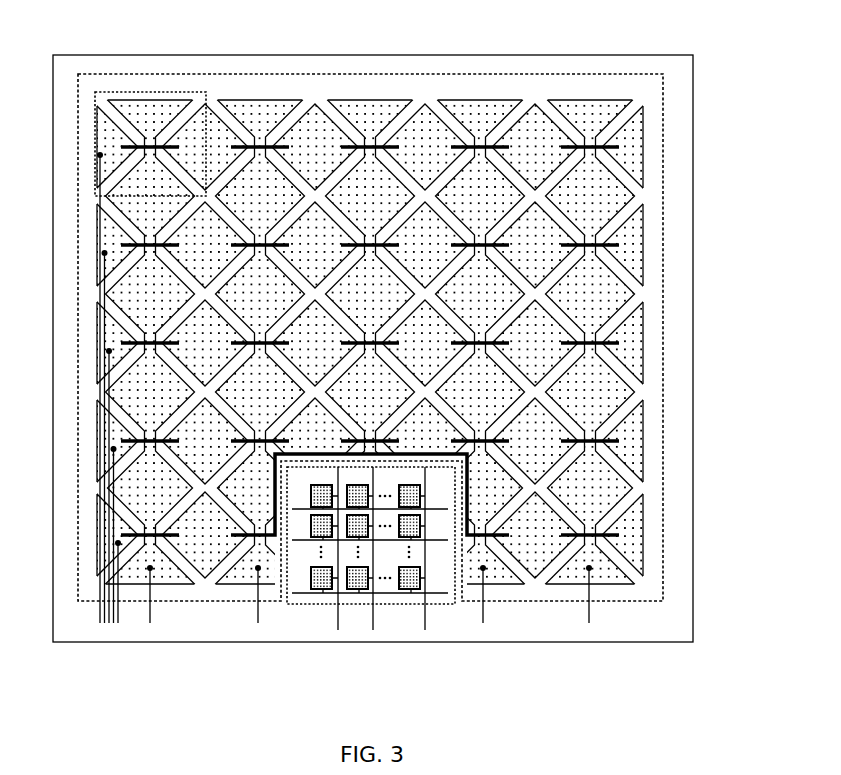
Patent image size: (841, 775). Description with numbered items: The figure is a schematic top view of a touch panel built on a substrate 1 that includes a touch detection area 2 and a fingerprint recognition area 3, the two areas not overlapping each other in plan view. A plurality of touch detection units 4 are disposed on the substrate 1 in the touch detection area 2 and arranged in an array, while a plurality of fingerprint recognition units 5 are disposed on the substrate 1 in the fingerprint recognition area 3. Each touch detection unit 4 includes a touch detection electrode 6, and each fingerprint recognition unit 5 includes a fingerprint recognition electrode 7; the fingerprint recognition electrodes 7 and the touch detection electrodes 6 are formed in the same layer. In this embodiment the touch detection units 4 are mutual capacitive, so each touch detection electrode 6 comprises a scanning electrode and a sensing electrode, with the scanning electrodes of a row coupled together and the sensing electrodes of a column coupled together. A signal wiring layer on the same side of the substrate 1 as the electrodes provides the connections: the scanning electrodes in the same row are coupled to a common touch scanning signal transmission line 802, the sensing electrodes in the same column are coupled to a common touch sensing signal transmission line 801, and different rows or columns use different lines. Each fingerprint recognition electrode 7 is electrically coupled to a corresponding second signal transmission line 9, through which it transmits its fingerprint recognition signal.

The substrate 1 is at (702, 108).
The touch detection area 2 is at (66, 122).
The fingerprint recognition area 3 is at (466, 584).
The touch detection unit 4 is at (215, 91).
The fingerprint recognition unit 5 is at (434, 589).
The touch detection electrode 6 is at (148, 108).
The fingerprint recognition electrode 7 is at (357, 594).
The second signal transmission line 9 is at (385, 617).
The touch sensing signal transmission line 801 is at (161, 611).
The touch scanning signal transmission line 802 is at (86, 293).